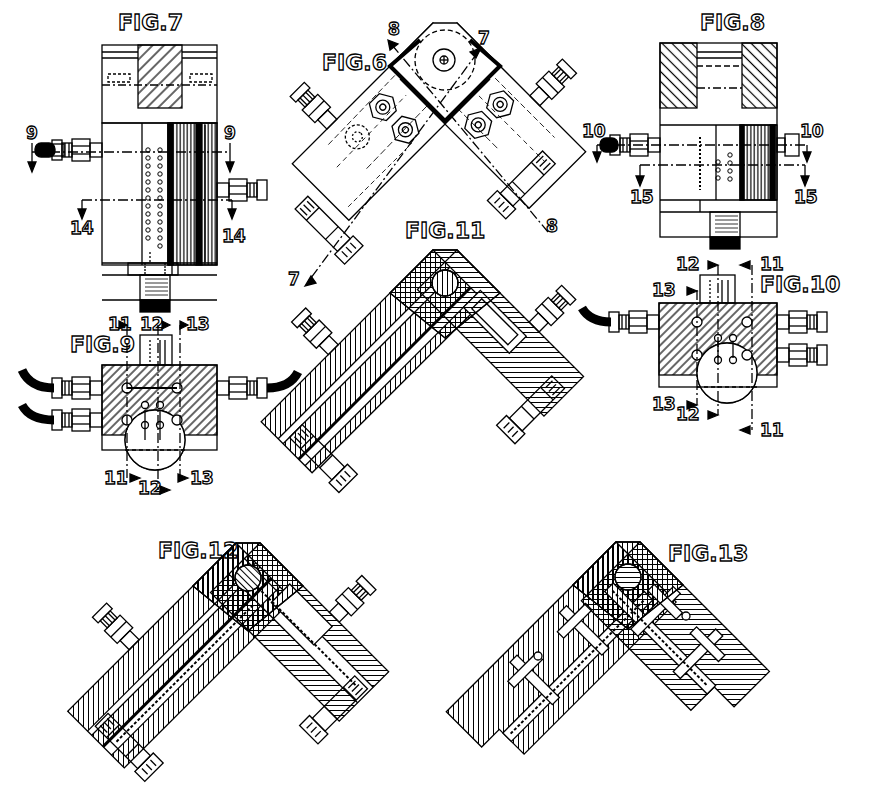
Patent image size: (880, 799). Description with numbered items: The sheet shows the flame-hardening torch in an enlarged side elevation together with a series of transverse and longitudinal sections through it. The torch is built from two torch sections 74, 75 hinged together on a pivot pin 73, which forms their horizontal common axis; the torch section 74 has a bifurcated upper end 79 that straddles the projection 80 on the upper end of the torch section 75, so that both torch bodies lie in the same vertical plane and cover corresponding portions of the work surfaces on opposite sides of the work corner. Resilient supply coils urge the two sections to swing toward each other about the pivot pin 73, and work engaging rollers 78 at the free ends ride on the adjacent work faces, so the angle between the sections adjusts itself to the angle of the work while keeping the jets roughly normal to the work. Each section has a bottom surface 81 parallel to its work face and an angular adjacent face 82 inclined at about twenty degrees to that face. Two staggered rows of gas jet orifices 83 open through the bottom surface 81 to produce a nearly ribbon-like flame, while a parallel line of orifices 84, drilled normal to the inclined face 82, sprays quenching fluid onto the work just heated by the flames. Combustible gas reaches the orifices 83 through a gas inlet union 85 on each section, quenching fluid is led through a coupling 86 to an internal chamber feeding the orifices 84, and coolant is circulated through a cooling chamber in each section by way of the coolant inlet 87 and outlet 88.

In FIG. 7, the pivot pin 73 is at (215, 81).
In FIG. 6, the pivot pin 73 is at (458, 60).
In FIG. 11, the pivot pin 73 is at (462, 268).
In FIG. 12, the pivot pin 73 is at (266, 558).
In FIG. 13, the pivot pin 73 is at (618, 563).
In FIG. 7, the torch section 74 is at (102, 247).
In FIG. 6, the torch section 74 is at (320, 152).
In FIG. 11, the torch section 74 is at (338, 480).
In FIG. 12, the torch section 74 is at (100, 690).
In FIG. 13, the torch section 74 is at (522, 640).
In FIG. 6, the torch section 75 is at (562, 125).
In FIG. 8, the torch section 75 is at (662, 228).
In FIG. 11, the torch section 75 is at (578, 392).
In FIG. 10, the torch section 75 is at (666, 394).
In FIG. 12, the torch section 75 is at (386, 668).
In FIG. 13, the torch section 75 is at (740, 642).
In FIG. 6, the work engaging roller 78 is at (360, 236).
In FIG. 9, the work engaging roller 78 is at (172, 452).
In FIG. 11, the work engaging roller 78 is at (512, 418).
In FIG. 10, the work engaging roller 78 is at (727, 403).
In FIG. 12, the work engaging roller 78 is at (160, 756).
In FIG. 7, the bifurcated upper end 79 is at (219, 52).
In FIG. 7, the projection 80 is at (172, 47).
In FIG. 7, the bottom surface 81 is at (145, 256).
In FIG. 9, the bottom surface 81 is at (148, 444).
In FIG. 7, the angular adjacent face 82 is at (206, 270).
In FIG. 9, the angular adjacent face 82 is at (196, 430).
In FIG. 10, the angular adjacent face 82 is at (667, 378).
In FIG. 7, the gas jet orifices 83 is at (143, 172).
In FIG. 8, the gas jet orifices 83 is at (762, 130).
In FIG. 9, the gas jet orifices 83 is at (128, 428).
In FIG. 10, the gas jet orifices 83 is at (722, 340).
In FIG. 12, the gas jet orifices 83 is at (290, 680).
In FIG. 7, the orifices 84 is at (218, 208).
In FIG. 8, the orifices 84 is at (700, 138).
In FIG. 9, the orifices 84 is at (190, 442).
In FIG. 13, the orifices 84 is at (600, 656).
In FIG. 6, the gas inlet union 85 is at (312, 96).
In FIG. 11, the gas inlet union 85 is at (326, 314).
In FIG. 12, the gas inlet union 85 is at (114, 616).
In FIG. 9, the coupling 86 is at (248, 370).
In FIG. 10, the coupling 86 is at (642, 306).
In FIG. 13, the coupling 86 is at (534, 656).
In FIG. 9, the coolant inlet 87 is at (84, 432).
In FIG. 9, the coolant outlet 88 is at (88, 378).